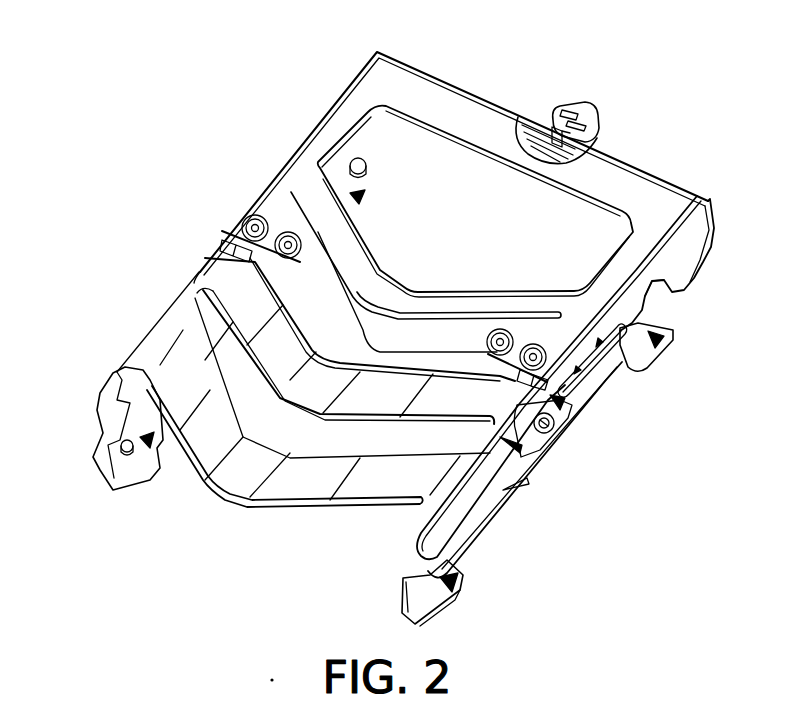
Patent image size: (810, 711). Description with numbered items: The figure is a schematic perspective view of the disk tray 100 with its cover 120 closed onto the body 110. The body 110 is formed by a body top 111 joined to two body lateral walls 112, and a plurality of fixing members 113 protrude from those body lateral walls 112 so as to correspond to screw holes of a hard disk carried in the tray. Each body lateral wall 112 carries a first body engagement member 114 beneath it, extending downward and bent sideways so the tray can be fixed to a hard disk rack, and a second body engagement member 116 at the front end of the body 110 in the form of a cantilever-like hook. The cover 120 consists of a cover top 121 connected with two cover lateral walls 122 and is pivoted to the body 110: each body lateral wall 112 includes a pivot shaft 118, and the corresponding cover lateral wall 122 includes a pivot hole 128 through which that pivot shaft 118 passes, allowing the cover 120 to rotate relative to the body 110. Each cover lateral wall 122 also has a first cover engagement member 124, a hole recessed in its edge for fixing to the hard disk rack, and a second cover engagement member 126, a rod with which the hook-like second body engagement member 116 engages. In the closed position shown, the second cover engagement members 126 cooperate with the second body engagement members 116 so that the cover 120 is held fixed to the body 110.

The disk tray 100 is at (124, 114).
The body 110 is at (190, 237).
The body top 111 is at (170, 362).
The body lateral wall 112 is at (127, 398).
The fixing member 113 is at (357, 160).
The first body engagement member 114 is at (647, 357).
The second body engagement member 116 is at (583, 108).
The pivot shaft 118 is at (553, 427).
The cover 120 is at (339, 44).
The cover top 121 is at (423, 88).
The cover lateral wall 122 is at (372, 120).
The first cover engagement member 124 is at (648, 298).
The second cover engagement member 126 is at (531, 118).
The pivot hole 128 is at (560, 407).